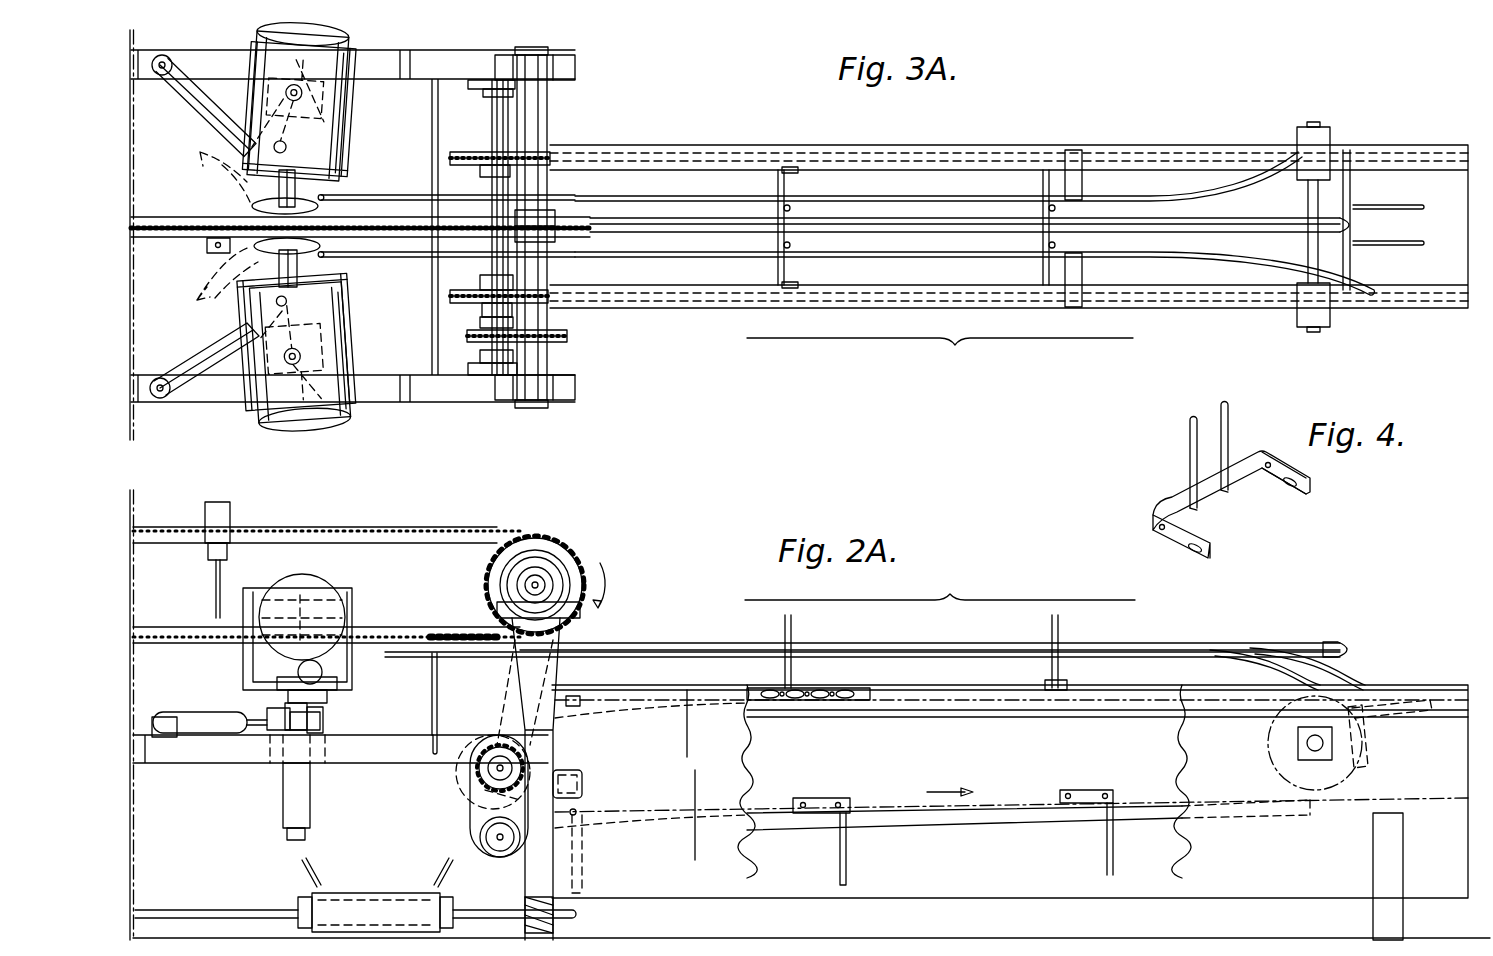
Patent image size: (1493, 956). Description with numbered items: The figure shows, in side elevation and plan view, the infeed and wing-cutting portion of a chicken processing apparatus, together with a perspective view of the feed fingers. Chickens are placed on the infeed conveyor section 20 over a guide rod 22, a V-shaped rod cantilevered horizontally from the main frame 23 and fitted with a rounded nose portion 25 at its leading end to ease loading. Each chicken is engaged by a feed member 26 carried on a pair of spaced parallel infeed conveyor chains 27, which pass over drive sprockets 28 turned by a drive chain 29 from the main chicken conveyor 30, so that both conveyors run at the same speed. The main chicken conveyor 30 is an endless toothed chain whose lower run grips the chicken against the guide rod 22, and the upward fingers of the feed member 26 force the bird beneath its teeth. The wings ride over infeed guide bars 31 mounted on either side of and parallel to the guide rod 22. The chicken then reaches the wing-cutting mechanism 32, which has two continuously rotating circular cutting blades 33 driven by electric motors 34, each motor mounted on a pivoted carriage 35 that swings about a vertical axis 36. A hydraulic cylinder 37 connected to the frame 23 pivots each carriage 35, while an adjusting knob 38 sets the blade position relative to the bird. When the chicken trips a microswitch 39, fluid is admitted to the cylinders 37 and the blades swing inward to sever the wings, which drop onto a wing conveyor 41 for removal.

In FIG. 3A, the infeed conveyor section 20 is at (940, 355).
In FIG. 2A, the infeed conveyor section 20 is at (940, 586).
In FIG. 3A, the guide rod 22 is at (143, 217).
In FIG. 2A, the guide rod 22 is at (171, 650).
In FIG. 3A, the main frame 23 is at (460, 393).
In FIG. 2A, the main frame 23 is at (375, 758).
In FIG. 3A, the rounded nose portion 25 is at (1356, 227).
In FIG. 2A, the rounded nose portion 25 is at (1347, 645).
In FIG. 3A, the feed member 26 is at (776, 182).
In FIG. 4, the feed member 26 is at (1172, 500).
In FIG. 2A, the feed member 26 is at (567, 702).
In FIG. 3A, the infeed conveyor chains 27 is at (533, 157).
In FIG. 2A, the infeed conveyor chains 27 is at (857, 700).
In FIG. 3A, the drive sprockets 28 is at (457, 152).
In FIG. 2A, the drive sprockets 28 is at (463, 797).
In FIG. 3A, the drive chain 29 is at (567, 340).
In FIG. 2A, the drive chain 29 is at (513, 687).
In FIG. 3A, the main chicken conveyor 30 is at (448, 222).
In FIG. 2A, the main chicken conveyor 30 is at (553, 540).
In FIG. 3A, the infeed guide bars 31 is at (383, 195).
In FIG. 2A, the infeed guide bars 31 is at (383, 652).
In FIG. 3A, the wing-cutting mechanism 32 is at (292, 232).
In FIG. 2A, the wing-cutting mechanism 32 is at (302, 648).
In FIG. 3A, the circular cutting blades 33 is at (222, 197).
In FIG. 3A, the electric motors 34 is at (253, 33).
In FIG. 2A, the electric motors 34 is at (314, 615).
In FIG. 3A, the pivoted carriage 35 is at (354, 119).
In FIG. 2A, the pivoted carriage 35 is at (243, 658).
In FIG. 3A, the vertical axis 36 is at (334, 92).
In FIG. 2A, the vertical axis 36 is at (293, 838).
In FIG. 3A, the hydraulic cylinder 37 is at (193, 105).
In FIG. 2A, the hydraulic cylinder 37 is at (217, 730).
In FIG. 2A, the adjusting knob 38 is at (325, 680).
In FIG. 3A, the microswitch 39 is at (205, 253).
In FIG. 2A, the microswitch 39 is at (231, 514).
In FIG. 2A, the wing conveyor 41 is at (372, 892).